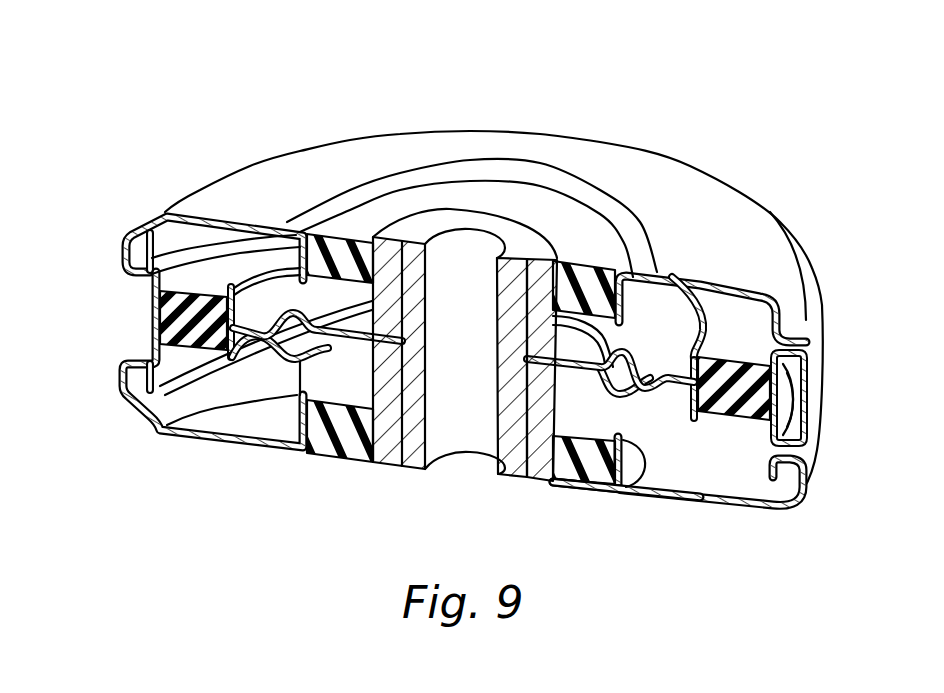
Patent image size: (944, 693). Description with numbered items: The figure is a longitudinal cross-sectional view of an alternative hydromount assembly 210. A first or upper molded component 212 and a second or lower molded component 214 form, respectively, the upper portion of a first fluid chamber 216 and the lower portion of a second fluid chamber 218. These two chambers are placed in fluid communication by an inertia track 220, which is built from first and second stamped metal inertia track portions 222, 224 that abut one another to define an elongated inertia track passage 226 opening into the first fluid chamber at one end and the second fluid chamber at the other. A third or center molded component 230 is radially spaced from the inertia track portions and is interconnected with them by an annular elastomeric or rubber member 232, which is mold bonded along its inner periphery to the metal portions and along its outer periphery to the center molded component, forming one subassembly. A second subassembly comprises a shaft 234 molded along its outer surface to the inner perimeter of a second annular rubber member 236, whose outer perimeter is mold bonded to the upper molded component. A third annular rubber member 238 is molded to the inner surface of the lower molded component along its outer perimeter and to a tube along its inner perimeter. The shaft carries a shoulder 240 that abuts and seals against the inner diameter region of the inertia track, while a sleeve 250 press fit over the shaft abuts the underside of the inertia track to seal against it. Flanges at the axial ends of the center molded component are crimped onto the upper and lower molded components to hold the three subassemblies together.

The hydromount assembly 210 is at (115, 317).
The first or upper molded component 212 is at (662, 183).
The second or lower molded component 214 is at (738, 505).
The first fluid chamber 216 is at (216, 244).
The second fluid chamber 218 is at (252, 412).
The inertia track 220 is at (598, 482).
The first stamped metal inertia track portion 222 is at (648, 333).
The second stamped metal inertia track portion 224 is at (636, 385).
The inertia track passage 226 is at (308, 333).
The third or center molded component 230 is at (790, 377).
The annular elastomeric or rubber member 232 is at (778, 407).
The shaft 234 is at (487, 220).
The second annular elastomeric/rubber member 236 is at (408, 198).
The third annular elastomeric/rubber member 238 is at (558, 365).
The shoulder 240 is at (428, 324).
The sleeve 250 is at (538, 470).